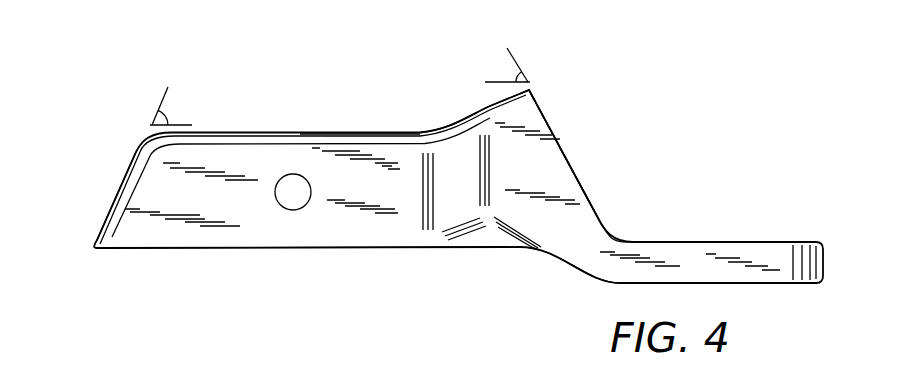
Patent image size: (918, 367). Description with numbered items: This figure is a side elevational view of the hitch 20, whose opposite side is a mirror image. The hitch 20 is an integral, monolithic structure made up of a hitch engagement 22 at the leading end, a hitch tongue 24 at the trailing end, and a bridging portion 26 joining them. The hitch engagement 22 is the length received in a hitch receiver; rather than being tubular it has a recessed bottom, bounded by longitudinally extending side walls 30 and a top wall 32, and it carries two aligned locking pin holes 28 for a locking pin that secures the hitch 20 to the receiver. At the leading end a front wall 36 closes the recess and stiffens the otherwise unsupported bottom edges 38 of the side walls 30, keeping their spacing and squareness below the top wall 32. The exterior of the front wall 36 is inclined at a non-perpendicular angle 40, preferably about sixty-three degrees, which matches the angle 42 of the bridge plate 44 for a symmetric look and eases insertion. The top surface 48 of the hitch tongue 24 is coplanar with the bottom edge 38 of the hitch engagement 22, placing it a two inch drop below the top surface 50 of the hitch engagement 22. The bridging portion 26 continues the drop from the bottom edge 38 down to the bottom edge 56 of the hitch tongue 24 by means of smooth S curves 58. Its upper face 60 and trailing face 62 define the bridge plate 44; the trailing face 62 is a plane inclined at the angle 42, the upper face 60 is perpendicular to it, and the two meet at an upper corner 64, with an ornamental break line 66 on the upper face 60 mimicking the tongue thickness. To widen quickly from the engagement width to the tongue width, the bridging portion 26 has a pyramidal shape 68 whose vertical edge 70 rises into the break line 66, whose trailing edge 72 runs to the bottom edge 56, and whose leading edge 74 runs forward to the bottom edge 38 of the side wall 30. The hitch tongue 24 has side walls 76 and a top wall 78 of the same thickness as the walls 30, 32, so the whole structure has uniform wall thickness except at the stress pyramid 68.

The hitch 20 is at (229, 82).
The hitch engagement 22 is at (292, 118).
The hitch tongue 24 is at (717, 228).
The bridging portion 26 is at (583, 155).
The locking pin holes 28 is at (291, 193).
The side walls 30 is at (353, 167).
The top wall 32 is at (388, 131).
The front wall 36 is at (112, 203).
The bottom edges 38 is at (347, 249).
The angle 40 is at (174, 123).
The angle 42 is at (508, 81).
The bridge plate 44 is at (548, 152).
The top surface 48 is at (730, 241).
The top surface 50 is at (338, 130).
The bottom edge 56 is at (797, 284).
The S curves 58 is at (557, 264).
The upper face 60 is at (492, 101).
The trailing face 62 is at (582, 188).
The upper corner 64 is at (529, 90).
The break line 66 is at (495, 103).
The pyramidal shape 68 is at (492, 221).
The vertical edge 70 is at (486, 172).
The trailing edge 72 is at (458, 231).
The leading edge 74 is at (518, 247).
The side walls 76 is at (697, 272).
The top wall 78 is at (781, 241).